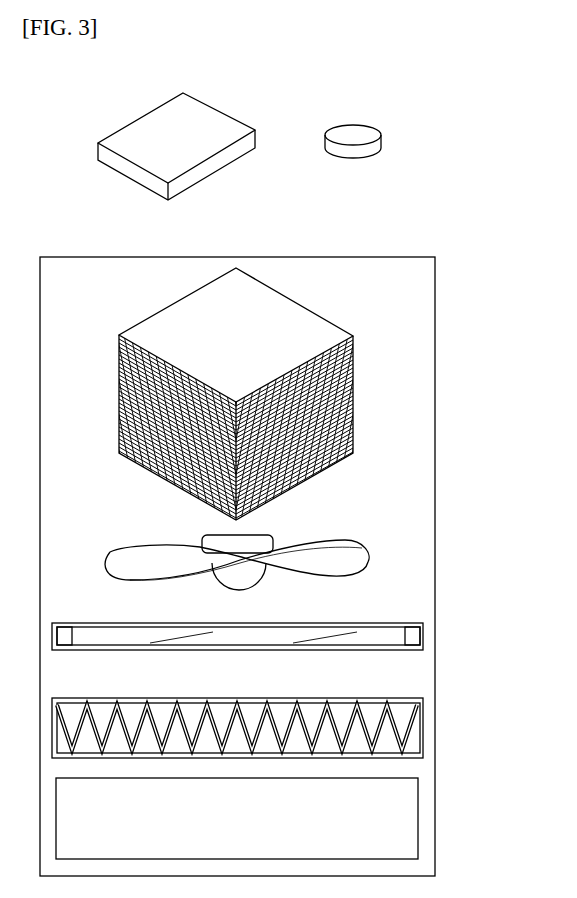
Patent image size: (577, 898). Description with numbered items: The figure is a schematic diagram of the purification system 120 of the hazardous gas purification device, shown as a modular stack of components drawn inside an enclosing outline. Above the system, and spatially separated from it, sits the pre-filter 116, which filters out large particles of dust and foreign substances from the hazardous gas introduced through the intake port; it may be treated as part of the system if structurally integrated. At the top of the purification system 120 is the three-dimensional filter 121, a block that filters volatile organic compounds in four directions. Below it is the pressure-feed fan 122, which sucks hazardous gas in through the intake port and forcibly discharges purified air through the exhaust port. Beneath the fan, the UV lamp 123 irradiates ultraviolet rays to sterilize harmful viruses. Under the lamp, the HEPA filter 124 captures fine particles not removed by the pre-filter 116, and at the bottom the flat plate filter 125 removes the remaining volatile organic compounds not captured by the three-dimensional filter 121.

The pre-filter 116 is at (213, 175).
The purification system 120 is at (435, 278).
The three-dimensional filter 121 is at (353, 357).
The pressure-feed fan 122 is at (368, 560).
The UV lamp 123 is at (420, 632).
The HEPA filter 124 is at (420, 727).
The flat plate filter 125 is at (410, 813).